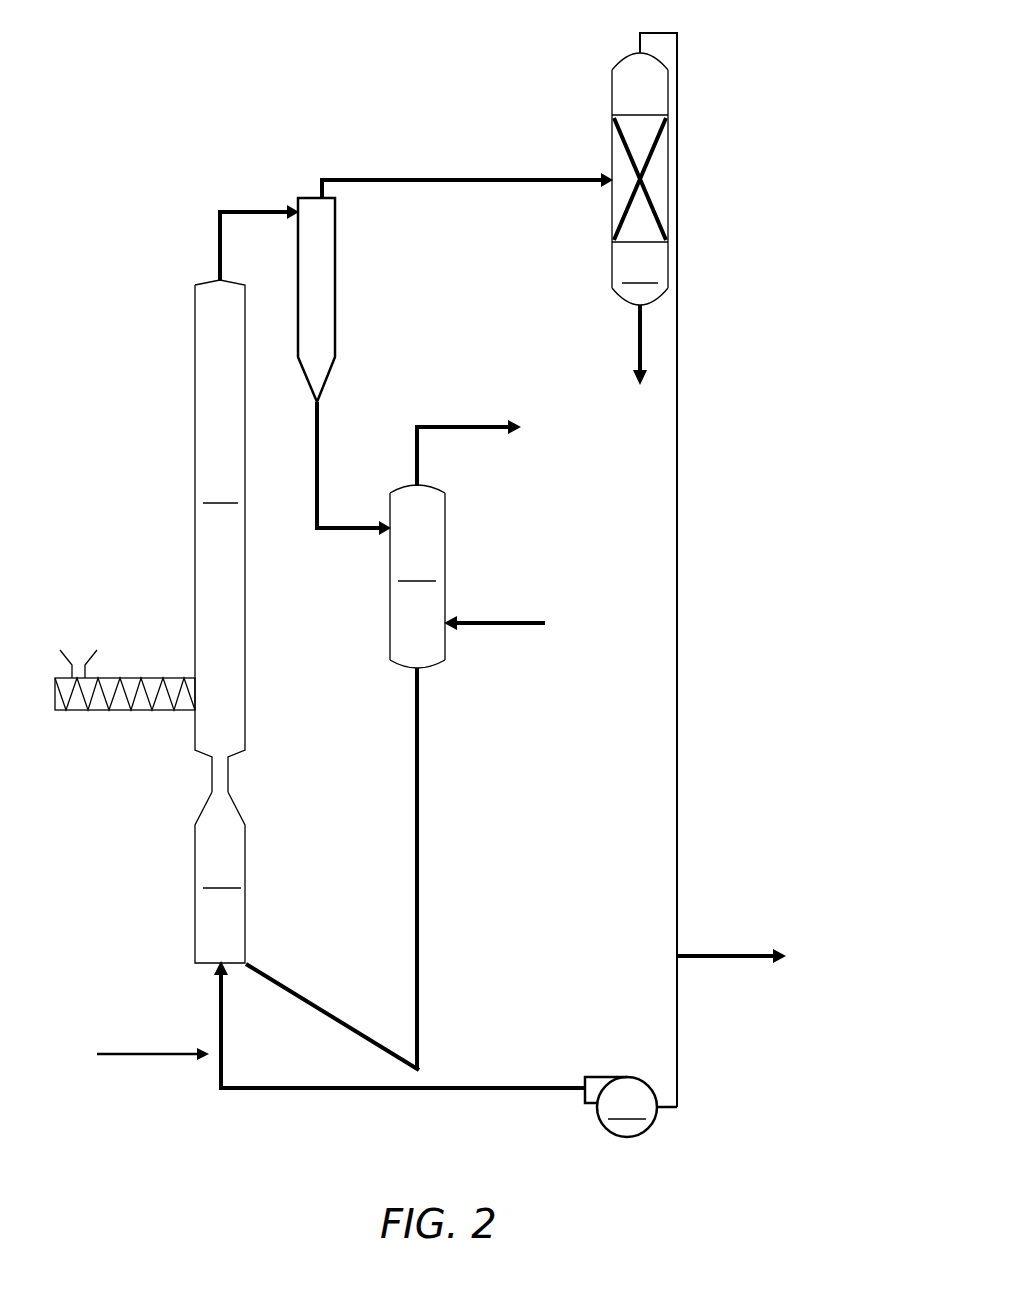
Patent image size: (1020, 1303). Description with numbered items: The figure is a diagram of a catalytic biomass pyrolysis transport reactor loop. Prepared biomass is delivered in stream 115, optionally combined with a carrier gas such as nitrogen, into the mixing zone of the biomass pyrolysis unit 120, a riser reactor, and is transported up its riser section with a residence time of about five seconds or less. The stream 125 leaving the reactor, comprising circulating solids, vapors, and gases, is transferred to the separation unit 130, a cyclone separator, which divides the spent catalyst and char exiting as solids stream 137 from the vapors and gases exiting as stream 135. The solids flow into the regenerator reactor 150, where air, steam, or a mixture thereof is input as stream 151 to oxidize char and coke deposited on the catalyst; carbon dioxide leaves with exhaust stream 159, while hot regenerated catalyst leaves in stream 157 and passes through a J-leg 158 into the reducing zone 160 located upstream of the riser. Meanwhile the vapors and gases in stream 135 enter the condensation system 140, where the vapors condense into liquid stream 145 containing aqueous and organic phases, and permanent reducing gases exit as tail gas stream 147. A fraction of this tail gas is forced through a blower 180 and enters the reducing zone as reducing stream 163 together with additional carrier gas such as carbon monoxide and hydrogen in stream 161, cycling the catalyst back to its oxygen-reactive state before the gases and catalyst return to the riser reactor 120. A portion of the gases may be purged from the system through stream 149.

The prepared biomass stream 115 is at (167, 678).
The catalytic biomass pyrolysis unit 120 is at (220, 536).
The pyrolysis product stream 125 is at (218, 252).
The solid/vapor separation unit 130 is at (336, 300).
The pyrolysis vapor stream 135 is at (478, 178).
The solids stream 137 is at (318, 428).
The vapor condensation/liquid collection unit 140 is at (640, 179).
The liquid bio-oil stream 145 is at (637, 350).
The tail gas stream 147 is at (678, 443).
The purge stream 149 is at (725, 953).
The catalyst regeneration unit 150 is at (417, 576).
The regenerator input stream 151 is at (498, 620).
The regenerated catalyst stream 157 is at (420, 835).
The J-leg 158 is at (386, 985).
The exhaust stream 159 is at (495, 425).
The reduction unit 160 is at (220, 877).
The carrier gas stream 161 is at (170, 1052).
The reducing gas stream 163 is at (483, 1087).
The blower 180 is at (631, 1107).